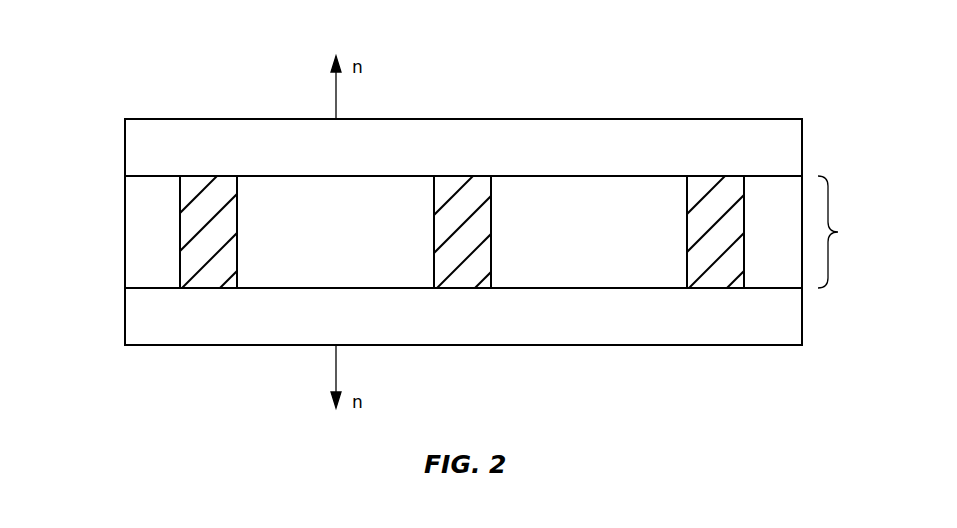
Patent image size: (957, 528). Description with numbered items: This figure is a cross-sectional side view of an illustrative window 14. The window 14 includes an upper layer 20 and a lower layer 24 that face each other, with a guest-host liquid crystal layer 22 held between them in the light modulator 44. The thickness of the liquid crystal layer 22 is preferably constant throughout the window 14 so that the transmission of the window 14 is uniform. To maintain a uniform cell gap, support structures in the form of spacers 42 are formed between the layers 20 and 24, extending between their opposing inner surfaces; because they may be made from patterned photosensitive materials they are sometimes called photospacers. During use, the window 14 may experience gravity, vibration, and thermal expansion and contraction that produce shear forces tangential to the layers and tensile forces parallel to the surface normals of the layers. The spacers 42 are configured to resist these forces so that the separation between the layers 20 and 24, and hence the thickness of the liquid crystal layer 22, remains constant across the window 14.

The window 14 is at (748, 50).
The layer 20 is at (135, 146).
The liquid crystal layer 22 is at (135, 236).
The layer 24 is at (135, 317).
The spacers 42 is at (443, 221).
The light modulator 44 is at (844, 232).